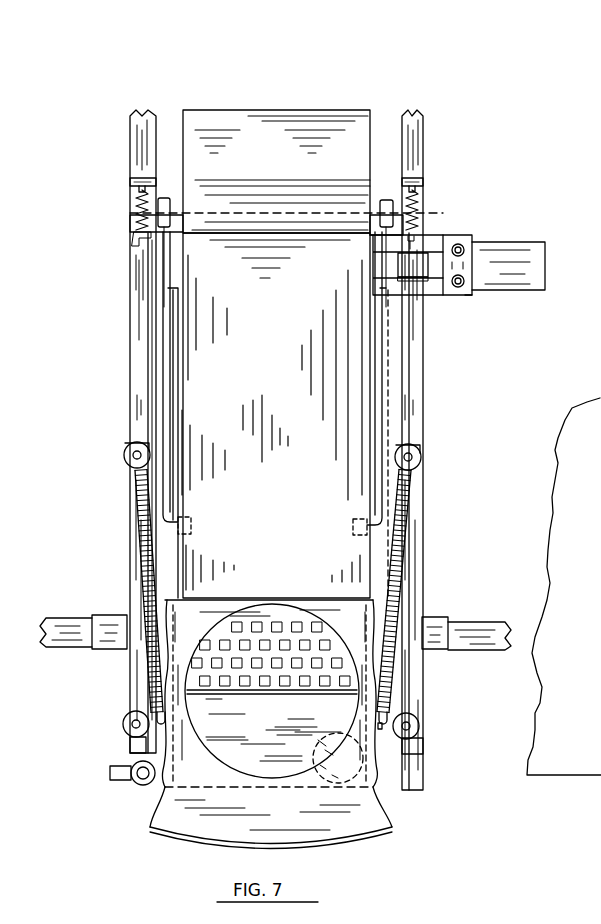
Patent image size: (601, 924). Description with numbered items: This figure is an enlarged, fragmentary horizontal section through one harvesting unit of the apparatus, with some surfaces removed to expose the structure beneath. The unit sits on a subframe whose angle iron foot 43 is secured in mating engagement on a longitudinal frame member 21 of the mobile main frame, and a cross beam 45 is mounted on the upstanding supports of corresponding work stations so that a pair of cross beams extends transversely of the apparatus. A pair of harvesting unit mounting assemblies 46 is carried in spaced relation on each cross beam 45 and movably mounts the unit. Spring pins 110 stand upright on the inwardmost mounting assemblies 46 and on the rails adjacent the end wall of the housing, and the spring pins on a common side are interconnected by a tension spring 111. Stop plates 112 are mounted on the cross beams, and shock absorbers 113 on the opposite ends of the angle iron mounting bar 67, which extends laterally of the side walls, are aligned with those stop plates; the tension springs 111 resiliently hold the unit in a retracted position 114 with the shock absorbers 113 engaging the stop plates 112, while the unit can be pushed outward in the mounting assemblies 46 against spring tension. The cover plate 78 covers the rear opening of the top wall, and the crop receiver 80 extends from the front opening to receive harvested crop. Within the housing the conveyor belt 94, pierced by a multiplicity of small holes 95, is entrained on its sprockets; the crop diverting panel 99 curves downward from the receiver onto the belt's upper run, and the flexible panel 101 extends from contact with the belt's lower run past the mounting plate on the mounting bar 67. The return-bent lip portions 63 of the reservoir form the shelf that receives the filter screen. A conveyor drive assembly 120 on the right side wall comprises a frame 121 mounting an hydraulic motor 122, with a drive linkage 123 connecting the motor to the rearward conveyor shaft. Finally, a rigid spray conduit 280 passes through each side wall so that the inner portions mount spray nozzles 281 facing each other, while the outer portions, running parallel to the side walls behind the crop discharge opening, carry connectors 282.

The retracted position 114 is at (323, 106).
The flexible panel 101 is at (259, 161).
The cover plate 78 is at (250, 382).
The cross beam 45 is at (136, 343).
The stop plate 112 is at (135, 182).
The shock absorber 113 is at (140, 207).
The connector 282 is at (165, 198).
The angle iron mounting bar 67 is at (420, 226).
The drive linkage 123 is at (410, 263).
The frame 121 is at (463, 238).
The hydraulic motor 122 is at (522, 252).
The conveyor drive assembly 120 is at (476, 302).
The rigid spray conduit 280 is at (163, 380).
The spray nozzle 281 is at (195, 522).
The harvesting unit mounting assembly 46 is at (131, 446).
The spring pin 110 is at (133, 455).
The tension spring 111 is at (140, 542).
The angle iron foot 43 is at (430, 616).
The longitudinal frame member 21 is at (478, 622).
The conveyor belt 94 is at (269, 706).
The hole 95 is at (290, 660).
The crop diverting panel 99 is at (254, 732).
The lip portion 63 is at (335, 778).
The crop receiver 80 is at (330, 842).